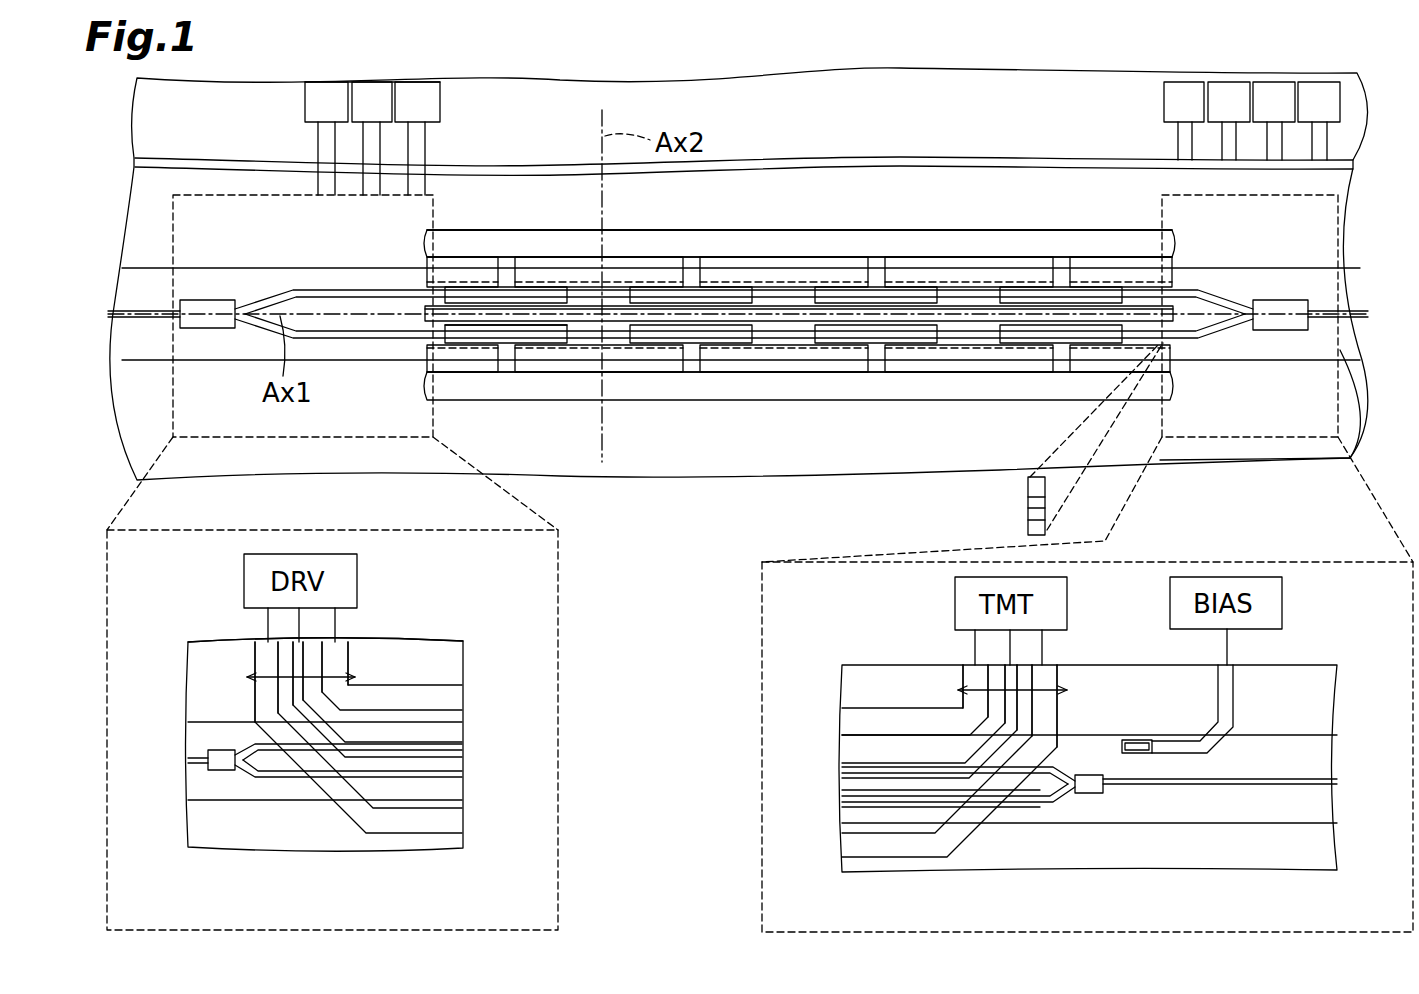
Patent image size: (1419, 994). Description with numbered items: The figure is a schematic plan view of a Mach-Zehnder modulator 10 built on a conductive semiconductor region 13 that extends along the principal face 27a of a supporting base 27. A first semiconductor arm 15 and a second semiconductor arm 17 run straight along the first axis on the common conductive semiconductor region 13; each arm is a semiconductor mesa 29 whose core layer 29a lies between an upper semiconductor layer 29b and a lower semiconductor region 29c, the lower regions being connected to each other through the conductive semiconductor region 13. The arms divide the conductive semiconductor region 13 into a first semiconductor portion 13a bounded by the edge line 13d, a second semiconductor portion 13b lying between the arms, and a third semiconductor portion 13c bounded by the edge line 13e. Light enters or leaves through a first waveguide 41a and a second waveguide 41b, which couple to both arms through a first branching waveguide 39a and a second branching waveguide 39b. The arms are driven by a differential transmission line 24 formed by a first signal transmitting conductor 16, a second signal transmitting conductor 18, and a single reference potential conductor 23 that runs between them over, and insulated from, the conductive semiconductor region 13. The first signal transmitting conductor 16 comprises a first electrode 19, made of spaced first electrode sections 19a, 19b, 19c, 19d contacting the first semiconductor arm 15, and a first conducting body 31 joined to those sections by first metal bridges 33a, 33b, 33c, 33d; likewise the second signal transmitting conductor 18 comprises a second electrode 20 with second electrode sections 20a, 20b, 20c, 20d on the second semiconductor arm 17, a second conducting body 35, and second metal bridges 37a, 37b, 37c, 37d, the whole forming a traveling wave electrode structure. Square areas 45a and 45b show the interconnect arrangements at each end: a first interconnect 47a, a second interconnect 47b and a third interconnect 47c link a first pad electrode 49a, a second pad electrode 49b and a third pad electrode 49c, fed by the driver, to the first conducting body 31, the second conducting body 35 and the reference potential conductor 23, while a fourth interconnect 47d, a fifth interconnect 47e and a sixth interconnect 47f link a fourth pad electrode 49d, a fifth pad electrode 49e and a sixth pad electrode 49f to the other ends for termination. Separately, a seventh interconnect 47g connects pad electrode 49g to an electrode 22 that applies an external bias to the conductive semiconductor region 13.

The Mach-Zehnder modulator 10 is at (707, 494).
The conductive semiconductor region 13 is at (1186, 372).
The first semiconductor portion 13a is at (370, 291).
The second semiconductor portion 13b is at (422, 329).
The third semiconductor portion 13c is at (370, 370).
The edge line 13d is at (397, 258).
The edge line 13e is at (383, 362).
The first semiconductor arm 15 is at (1205, 288).
The first signal transmitting conductor 16 is at (1015, 120).
The second semiconductor arm 17 is at (1240, 294).
The second signal transmitting conductor 18 is at (845, 519).
The first electrode 19 is at (783, 213).
The first electrode section 19a is at (506, 295).
The first electrode section 19b is at (691, 295).
The first electrode section 19c is at (876, 295).
The first electrode section 19d is at (1061, 295).
The second electrode 20 is at (783, 421).
The second electrode section 20a is at (506, 334).
The second electrode section 20b is at (691, 334).
The second electrode section 20c is at (876, 334).
The second electrode section 20d is at (1061, 334).
The electrode 22 is at (1152, 742).
The reference potential conductor 23 is at (433, 331).
The differential transmission line 24 is at (247, 677).
The supporting base 27 is at (1240, 462).
The principal face 27a is at (1300, 452).
The semiconductor mesa 29 is at (1060, 447).
The core layer 29a is at (1028, 508).
The upper semiconductor layer 29b is at (1028, 492).
The lower semiconductor region 29c is at (1028, 525).
The first conducting body 31 is at (945, 230).
The first metal bridge 33a is at (520, 257).
The first metal bridge 33b is at (688, 257).
The first metal bridge 33c is at (877, 257).
The first metal bridge 33d is at (1060, 257).
The second conducting body 35 is at (827, 400).
The second metal bridge 37a is at (500, 372).
The second metal bridge 37b is at (688, 372).
The second metal bridge 37c is at (877, 372).
The second metal bridge 37d is at (1060, 372).
The first branching waveguide 39a is at (222, 329).
The second branching waveguide 39b is at (1285, 300).
The first waveguide 41a is at (150, 311).
The second waveguide 41b is at (1320, 321).
The square area 45a is at (437, 217).
The square area 45b is at (1162, 215).
The first interconnect 47a is at (427, 175).
The second interconnect 47b is at (317, 176).
The third interconnect 47c is at (360, 137).
The fourth interconnect 47d is at (1180, 127).
The fifth interconnect 47e is at (1283, 138).
The sixth interconnect 47f is at (1222, 140).
The seventh interconnect 47g is at (1327, 135).
The first pad electrode 49a is at (434, 115).
The second pad electrode 49b is at (343, 115).
The third pad electrode 49c is at (388, 115).
The fourth pad electrode 49d is at (1200, 115).
The fifth pad electrode 49e is at (1290, 115).
The sixth pad electrode 49f is at (1245, 115).
The pad electrode 49g is at (1335, 115).